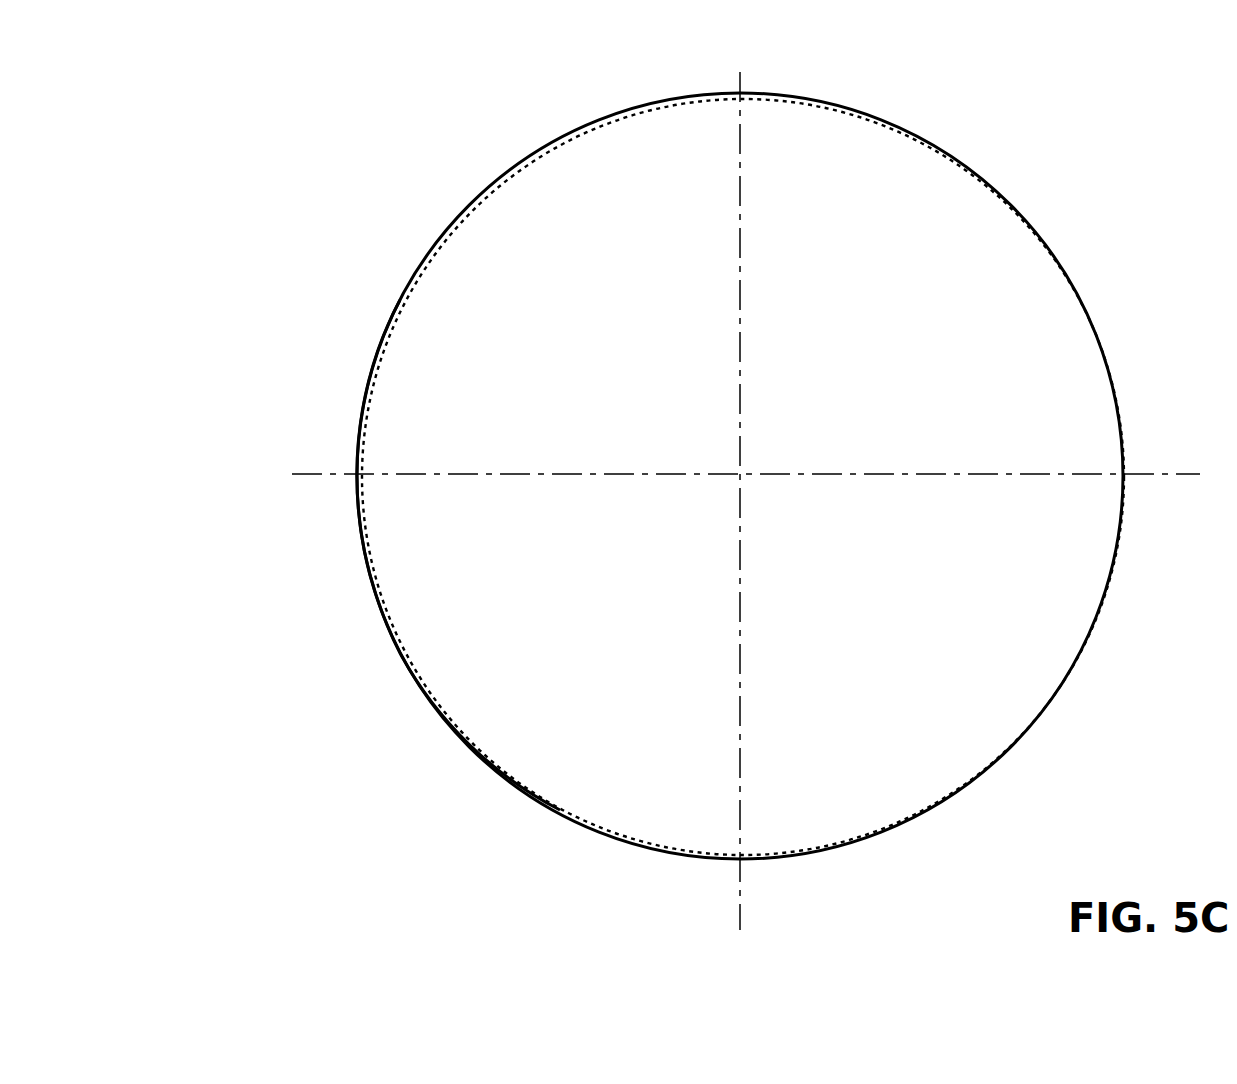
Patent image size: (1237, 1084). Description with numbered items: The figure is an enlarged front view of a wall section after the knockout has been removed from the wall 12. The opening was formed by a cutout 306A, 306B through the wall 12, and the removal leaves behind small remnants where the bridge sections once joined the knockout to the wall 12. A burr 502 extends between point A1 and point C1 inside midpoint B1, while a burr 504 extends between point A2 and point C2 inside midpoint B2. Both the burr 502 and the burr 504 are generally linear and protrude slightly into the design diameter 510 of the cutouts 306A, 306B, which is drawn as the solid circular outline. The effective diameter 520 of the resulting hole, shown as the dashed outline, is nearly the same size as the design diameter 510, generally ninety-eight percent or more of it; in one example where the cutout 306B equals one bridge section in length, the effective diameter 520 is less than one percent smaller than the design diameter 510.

The wall 12 is at (392, 176).
The cutout 306A is at (956, 130).
The cutout 306B is at (338, 486).
The burr 502 is at (370, 332).
The burr 504 is at (370, 614).
The design diameter 510 is at (456, 761).
The effective diameter 520 is at (521, 764).